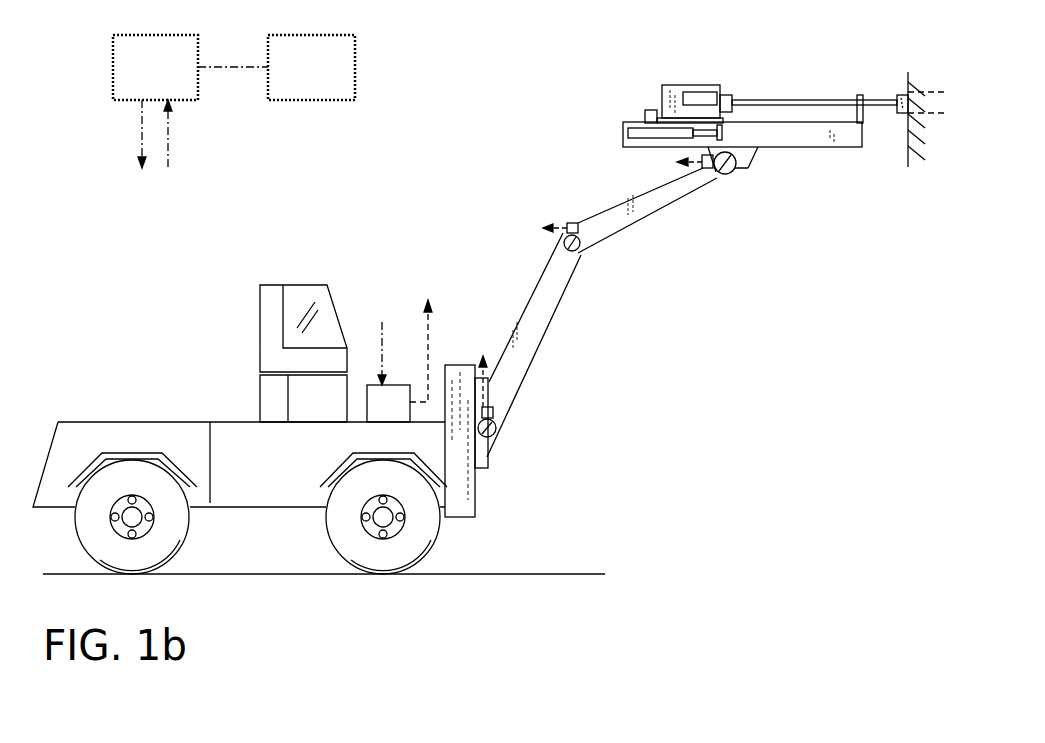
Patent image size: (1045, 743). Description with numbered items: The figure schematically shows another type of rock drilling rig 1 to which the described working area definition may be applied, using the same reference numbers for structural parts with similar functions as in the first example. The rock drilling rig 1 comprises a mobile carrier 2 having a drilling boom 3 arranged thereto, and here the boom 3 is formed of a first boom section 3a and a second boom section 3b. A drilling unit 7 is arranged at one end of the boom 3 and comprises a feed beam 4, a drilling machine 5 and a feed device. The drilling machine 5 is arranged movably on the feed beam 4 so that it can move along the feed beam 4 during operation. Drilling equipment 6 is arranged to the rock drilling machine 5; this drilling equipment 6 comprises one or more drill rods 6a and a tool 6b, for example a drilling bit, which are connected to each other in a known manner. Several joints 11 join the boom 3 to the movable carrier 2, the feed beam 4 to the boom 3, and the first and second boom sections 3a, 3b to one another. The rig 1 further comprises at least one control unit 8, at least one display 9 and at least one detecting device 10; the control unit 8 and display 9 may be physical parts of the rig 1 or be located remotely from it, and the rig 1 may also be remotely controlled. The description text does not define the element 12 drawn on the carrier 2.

The rock drilling rig 1 is at (188, 288).
The mobile carrier 2 is at (268, 478).
The drilling boom 3 is at (592, 162).
The first boom section 3a is at (530, 317).
The second boom section 3b is at (658, 198).
The feed beam 4 is at (772, 128).
The drilling machine 5 is at (670, 68).
The drilling equipment 6 is at (795, 63).
The drill rod 6a is at (763, 102).
The tool 6b is at (903, 93).
The drilling unit 7 is at (462, 212).
The control unit 8 is at (190, 101).
The display 9 is at (311, 67).
The detecting device 10 is at (494, 413).
The joint 11 is at (497, 440).
The measuring device 12 is at (388, 392).